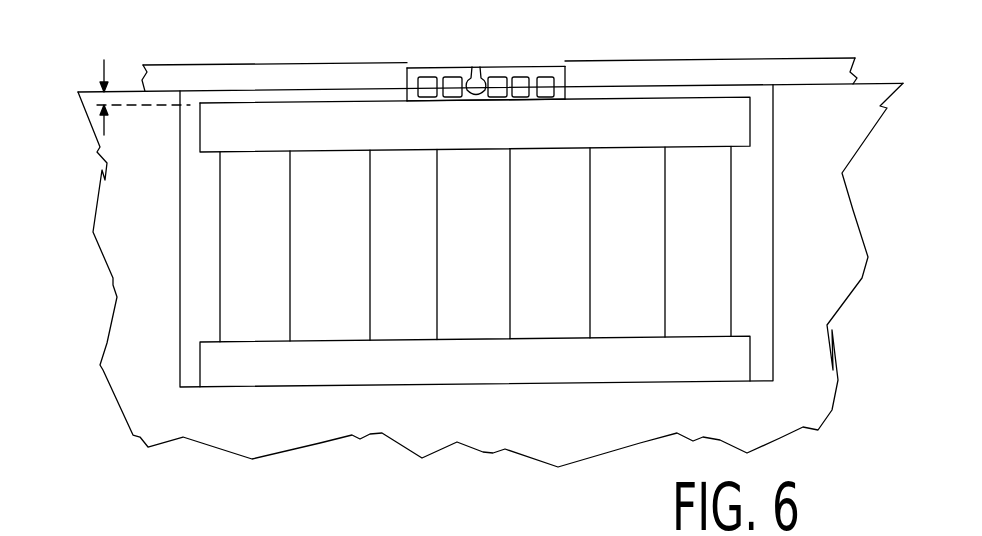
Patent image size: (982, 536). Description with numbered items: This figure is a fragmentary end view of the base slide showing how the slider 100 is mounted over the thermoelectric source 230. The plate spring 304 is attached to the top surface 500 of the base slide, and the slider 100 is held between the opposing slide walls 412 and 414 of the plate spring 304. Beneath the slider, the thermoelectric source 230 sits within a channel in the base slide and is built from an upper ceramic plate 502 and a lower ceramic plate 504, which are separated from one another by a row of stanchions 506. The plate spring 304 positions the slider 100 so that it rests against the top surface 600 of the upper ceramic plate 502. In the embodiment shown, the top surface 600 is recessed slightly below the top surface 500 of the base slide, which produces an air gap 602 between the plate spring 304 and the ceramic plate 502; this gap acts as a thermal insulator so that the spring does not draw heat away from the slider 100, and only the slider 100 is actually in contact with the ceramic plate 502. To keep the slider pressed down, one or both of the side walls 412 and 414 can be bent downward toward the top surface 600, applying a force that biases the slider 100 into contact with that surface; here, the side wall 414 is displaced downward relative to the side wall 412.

The slider 100 is at (510, 67).
The thermoelectric source 230 is at (197, 216).
The plate spring 304 is at (708, 65).
The slide wall 412 is at (407, 78).
The slide wall 414 is at (565, 78).
The top surface 500 is at (803, 84).
The upper ceramic plate 502 is at (530, 129).
The lower ceramic plate 504 is at (517, 356).
The stanchions 506 is at (385, 257).
The top surface 600 is at (355, 103).
The air gap 602 is at (102, 67).